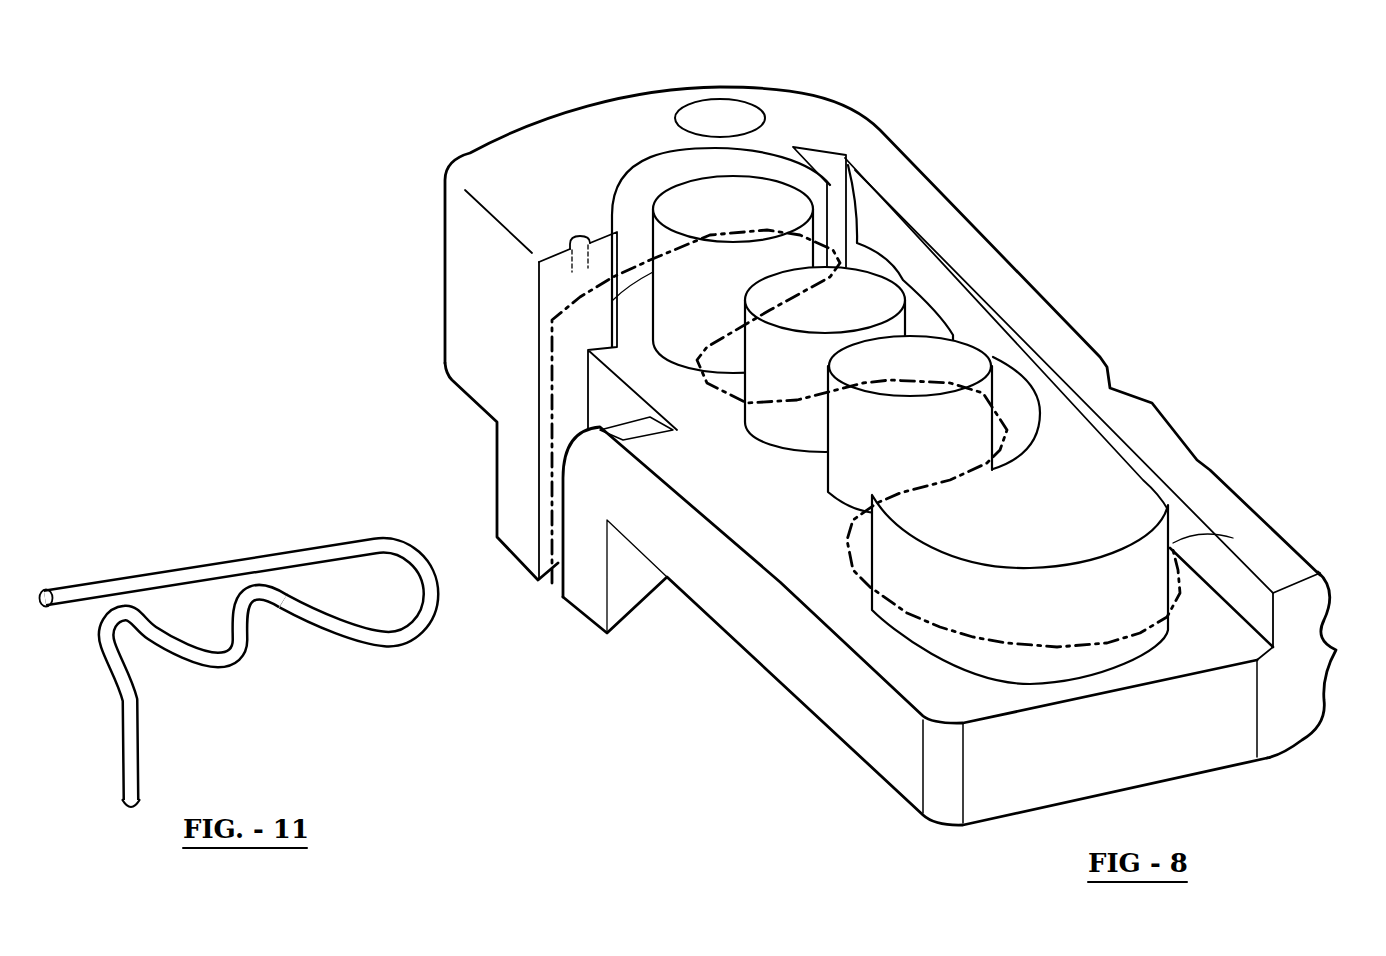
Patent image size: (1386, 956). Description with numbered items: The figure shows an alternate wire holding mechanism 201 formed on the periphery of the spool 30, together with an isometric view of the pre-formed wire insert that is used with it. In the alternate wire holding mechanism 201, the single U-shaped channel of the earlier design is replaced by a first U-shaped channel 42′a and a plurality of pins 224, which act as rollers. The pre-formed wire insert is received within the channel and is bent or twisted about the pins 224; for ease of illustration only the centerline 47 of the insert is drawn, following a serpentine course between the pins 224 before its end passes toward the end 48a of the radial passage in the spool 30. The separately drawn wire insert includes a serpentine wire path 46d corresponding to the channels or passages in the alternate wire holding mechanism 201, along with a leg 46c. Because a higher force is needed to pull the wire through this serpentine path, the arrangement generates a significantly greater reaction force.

In FIG. 8, the spool 30 is at (490, 132).
In FIG. 8, the end of the radial passage 48a is at (582, 247).
In FIG. 8, the pins 224 is at (750, 210).
In FIG. 8, the centerline of the wire insert 47 is at (720, 402).
In FIG. 8, the first U-shaped channel 42′a is at (1208, 560).
In FIG. 8, the alternate wire holding mechanism 201 is at (1213, 197).
In FIG. 11, the clip leg 46c is at (128, 750).
In FIG. 11, the serpentine wire path 46d is at (265, 612).